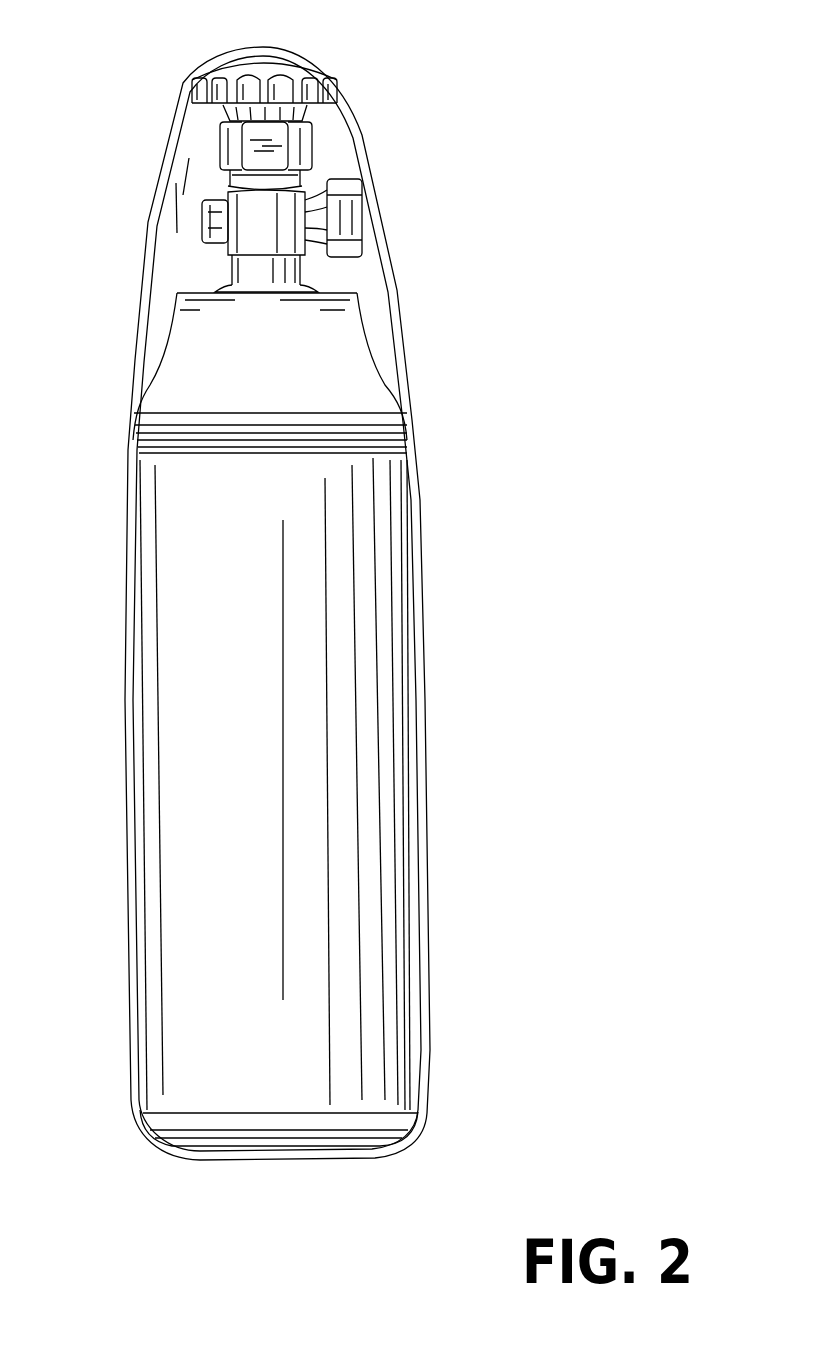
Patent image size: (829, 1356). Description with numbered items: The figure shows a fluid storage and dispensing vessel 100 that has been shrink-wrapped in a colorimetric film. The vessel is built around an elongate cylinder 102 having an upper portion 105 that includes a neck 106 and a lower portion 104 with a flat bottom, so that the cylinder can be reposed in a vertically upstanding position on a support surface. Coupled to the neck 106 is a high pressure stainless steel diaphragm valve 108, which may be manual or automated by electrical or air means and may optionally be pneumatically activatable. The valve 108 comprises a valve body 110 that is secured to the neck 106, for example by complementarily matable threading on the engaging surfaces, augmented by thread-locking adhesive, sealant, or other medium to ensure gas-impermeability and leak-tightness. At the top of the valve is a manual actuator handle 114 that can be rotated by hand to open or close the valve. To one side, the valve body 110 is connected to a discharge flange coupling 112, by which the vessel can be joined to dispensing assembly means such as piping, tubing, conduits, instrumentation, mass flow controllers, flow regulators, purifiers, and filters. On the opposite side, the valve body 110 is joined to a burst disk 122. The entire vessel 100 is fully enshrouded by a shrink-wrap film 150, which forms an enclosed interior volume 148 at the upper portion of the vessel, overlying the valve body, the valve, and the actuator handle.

The fluid storage and dispensing vessel 100 is at (506, 152).
The cylinder 102 is at (390, 787).
The lower portion 104 is at (177, 1135).
The upper portion 105 is at (173, 335).
The neck 106 is at (285, 272).
The high pressure stainless steel diaphragm valve 108 is at (292, 142).
The valve body 110 is at (290, 228).
The discharge flange coupling 112 is at (360, 188).
The manual actuator handle 114 is at (299, 57).
The burst disk 122 is at (217, 203).
The enclosed interior volume 148 is at (182, 263).
The shrink-wrap film 150 is at (403, 322).